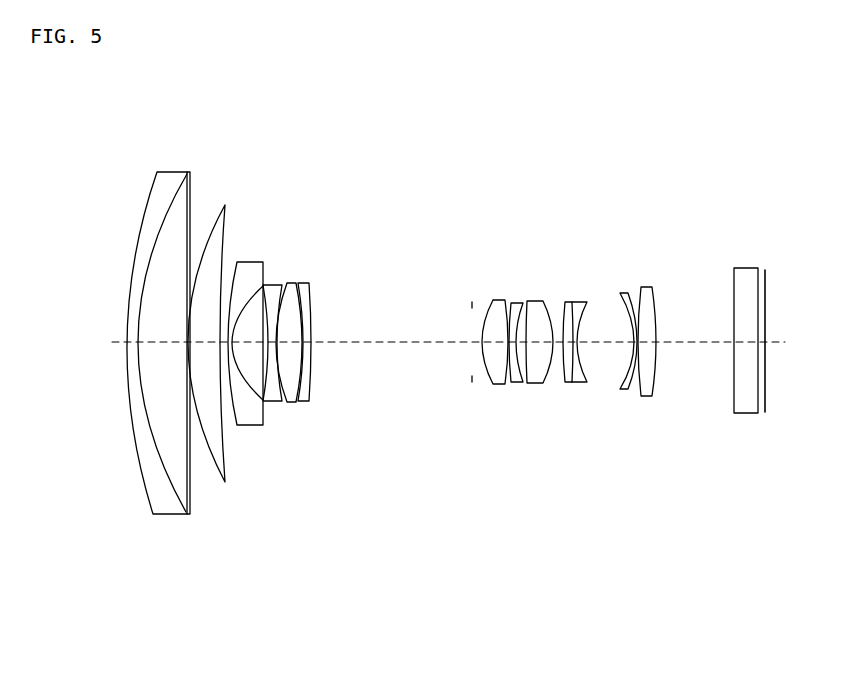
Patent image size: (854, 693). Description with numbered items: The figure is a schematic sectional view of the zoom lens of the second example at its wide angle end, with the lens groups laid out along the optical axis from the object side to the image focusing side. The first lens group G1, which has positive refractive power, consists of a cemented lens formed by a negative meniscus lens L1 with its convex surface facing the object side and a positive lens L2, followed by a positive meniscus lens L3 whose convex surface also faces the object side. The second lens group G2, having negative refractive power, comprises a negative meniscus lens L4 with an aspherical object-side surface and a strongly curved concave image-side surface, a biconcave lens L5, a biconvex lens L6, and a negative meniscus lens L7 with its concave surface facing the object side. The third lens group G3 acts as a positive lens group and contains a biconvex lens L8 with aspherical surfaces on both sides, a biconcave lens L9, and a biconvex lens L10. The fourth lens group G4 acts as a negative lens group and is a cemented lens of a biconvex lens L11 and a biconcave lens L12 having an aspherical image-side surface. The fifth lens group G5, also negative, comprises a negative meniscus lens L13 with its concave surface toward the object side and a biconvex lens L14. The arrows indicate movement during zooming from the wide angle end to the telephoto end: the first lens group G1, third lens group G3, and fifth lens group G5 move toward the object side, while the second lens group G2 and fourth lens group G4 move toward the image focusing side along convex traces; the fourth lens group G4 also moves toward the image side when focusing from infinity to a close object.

The first lens group G1 is at (112, 608).
The second lens group G2 is at (285, 601).
The third lens group G3 is at (386, 607).
The fourth lens group G4 is at (472, 603).
The fifth lens group G5 is at (517, 607).
The meniscus lens L1 is at (157, 332).
The lens L2 is at (170, 332).
The meniscus lens L3 is at (212, 316).
The meniscus lens L4 is at (245, 335).
The biconcave lens L5 is at (269, 323).
The biconvex lens L6 is at (289, 323).
The meniscus lens L7 is at (308, 323).
The biconvex lens L8 is at (492, 316).
The biconcave lens L9 is at (512, 315).
The biconvex lens L10 is at (539, 315).
The biconvex lens L11 is at (568, 315).
The biconcave lens L12 is at (589, 315).
The meniscus lens L13 is at (625, 318).
The biconvex lens L14 is at (653, 322).